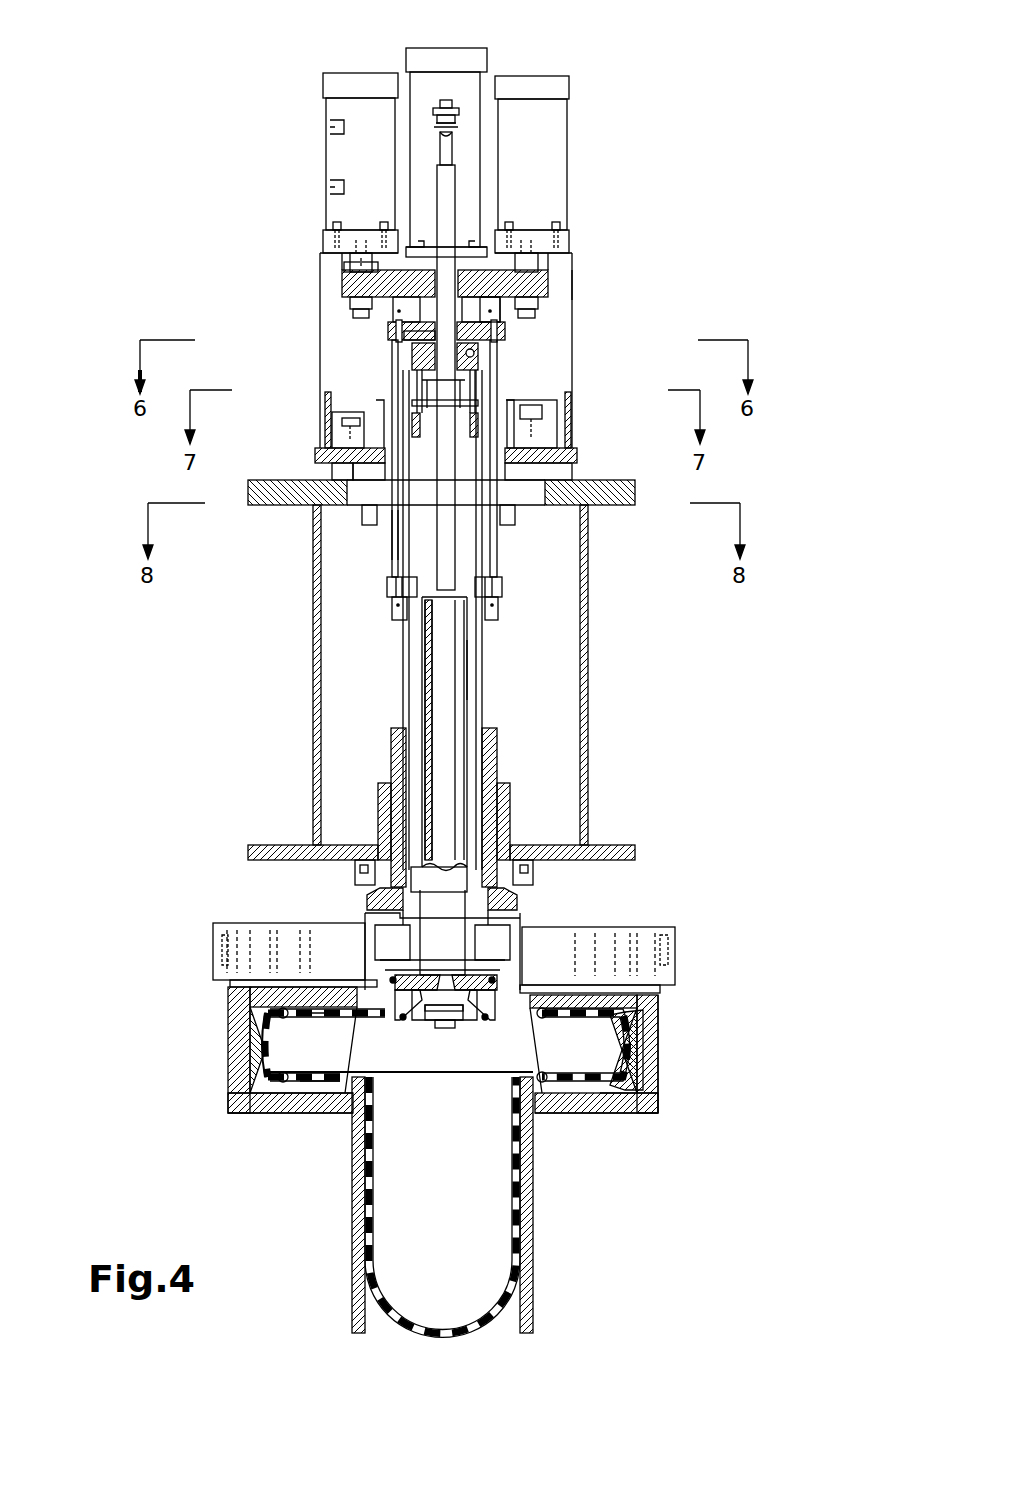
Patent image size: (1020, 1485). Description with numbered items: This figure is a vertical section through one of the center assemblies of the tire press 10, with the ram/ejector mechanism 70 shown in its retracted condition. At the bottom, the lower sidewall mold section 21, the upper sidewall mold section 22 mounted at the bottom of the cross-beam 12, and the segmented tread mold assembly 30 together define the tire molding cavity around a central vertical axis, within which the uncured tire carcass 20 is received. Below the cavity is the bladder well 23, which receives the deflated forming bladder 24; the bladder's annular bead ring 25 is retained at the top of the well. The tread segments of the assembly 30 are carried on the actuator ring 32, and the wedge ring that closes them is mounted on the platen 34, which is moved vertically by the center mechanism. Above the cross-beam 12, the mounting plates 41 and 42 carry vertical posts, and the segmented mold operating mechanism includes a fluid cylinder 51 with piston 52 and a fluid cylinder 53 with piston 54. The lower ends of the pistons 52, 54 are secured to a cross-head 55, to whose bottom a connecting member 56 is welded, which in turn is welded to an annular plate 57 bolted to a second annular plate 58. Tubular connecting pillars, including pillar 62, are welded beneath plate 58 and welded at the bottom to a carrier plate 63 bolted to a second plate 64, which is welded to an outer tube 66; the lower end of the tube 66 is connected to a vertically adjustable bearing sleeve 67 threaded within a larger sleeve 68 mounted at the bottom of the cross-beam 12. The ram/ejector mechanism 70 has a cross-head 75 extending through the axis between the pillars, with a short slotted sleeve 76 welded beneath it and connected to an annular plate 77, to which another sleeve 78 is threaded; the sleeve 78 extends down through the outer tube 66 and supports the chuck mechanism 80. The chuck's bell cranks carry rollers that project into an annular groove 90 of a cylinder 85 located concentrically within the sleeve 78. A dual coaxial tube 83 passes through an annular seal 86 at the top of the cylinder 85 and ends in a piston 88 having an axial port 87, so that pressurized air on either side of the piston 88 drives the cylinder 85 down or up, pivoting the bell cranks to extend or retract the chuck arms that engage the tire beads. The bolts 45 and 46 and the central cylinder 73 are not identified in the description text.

The tire press 10 is at (632, 182).
The cross-beam 12 is at (589, 712).
The uncured tire carcass 20 is at (640, 1050).
The lower sidewall mold section 21 is at (292, 1100).
The upper sidewall mold section 22 is at (229, 1016).
The bladder well 23 is at (352, 1200).
The forming bladder 24 is at (468, 1328).
The annular bead ring 25 is at (312, 1085).
The segmented tread mold assembly 30 is at (688, 1010).
The actuator ring 32 is at (660, 990).
The platen 34 is at (676, 950).
The mounting plate 41 is at (316, 460).
The mounting plate 42 is at (578, 460).
The bolt 45 is at (322, 236).
The bolt 46 is at (570, 244).
The fluid cylinder 51 is at (570, 116).
The piston 52 is at (536, 264).
The fluid cylinder 53 is at (324, 162).
The piston 54 is at (360, 260).
The cross-head 55 is at (351, 282).
The connecting member 56 is at (470, 306).
The annular plate 57 is at (388, 326).
The annular plate 58 is at (400, 336).
The connecting pillar 62 is at (479, 420).
The carrier plate 63 is at (505, 583).
The second plate 64 is at (499, 606).
The outer tube 66 is at (480, 660).
The bearing sleeve 67 is at (498, 746).
The larger sleeve 68 is at (511, 823).
The ram/ejector mechanism 70 is at (480, 128).
The central cylinder 73 is at (462, 85).
The cross-head 75 is at (480, 350).
The slotted sleeve 76 is at (470, 432).
The annular plate 77 is at (500, 513).
The sleeve 78 is at (395, 553).
The chuck mechanism 80 is at (432, 1020).
The tube 83 is at (452, 178).
The cylinder 85 is at (446, 658).
The annular seal 86 is at (395, 518).
The axial port 87 is at (534, 870).
The piston 88 is at (368, 902).
The annular groove 90 is at (446, 1005).